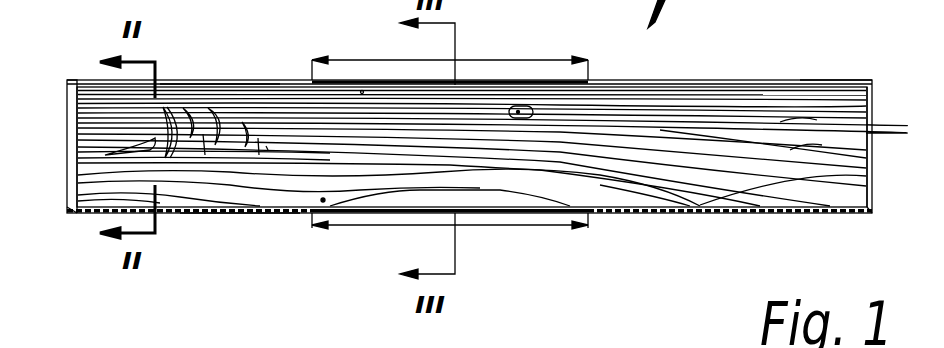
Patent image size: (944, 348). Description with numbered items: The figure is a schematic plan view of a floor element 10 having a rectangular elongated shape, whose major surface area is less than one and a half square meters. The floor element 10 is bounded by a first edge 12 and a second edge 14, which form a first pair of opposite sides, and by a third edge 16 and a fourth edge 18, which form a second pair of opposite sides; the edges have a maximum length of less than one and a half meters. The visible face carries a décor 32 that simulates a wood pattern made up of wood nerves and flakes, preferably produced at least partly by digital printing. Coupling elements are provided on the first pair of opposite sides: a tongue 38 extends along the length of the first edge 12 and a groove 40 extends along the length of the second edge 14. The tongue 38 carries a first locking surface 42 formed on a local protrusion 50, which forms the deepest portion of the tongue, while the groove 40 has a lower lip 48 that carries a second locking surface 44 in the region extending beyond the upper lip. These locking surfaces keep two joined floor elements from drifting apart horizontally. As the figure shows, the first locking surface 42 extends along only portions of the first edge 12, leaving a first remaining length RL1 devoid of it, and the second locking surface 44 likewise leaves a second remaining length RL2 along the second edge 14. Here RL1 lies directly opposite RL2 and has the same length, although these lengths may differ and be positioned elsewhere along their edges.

The floor element 10 is at (469, 214).
The first edge 12 is at (753, 207).
The second edge 14 is at (745, 85).
The third edge 16 is at (77, 152).
The fourth edge 18 is at (868, 153).
The décor 32 is at (817, 120).
The tongue 38 is at (245, 212).
The groove 40 is at (46, 74).
The first locking surface 42 is at (875, 213).
The second locking surface 44 is at (832, 80).
The lower lip 48 is at (217, 84).
The local protrusion 50 is at (63, 204).
The first remaining length RL1 is at (518, 226).
The second remaining length RL2 is at (518, 60).